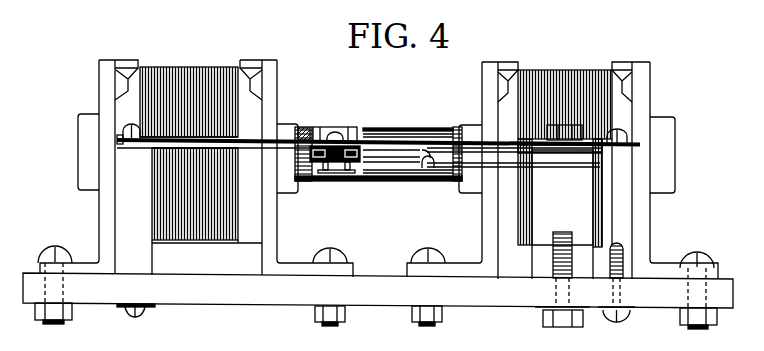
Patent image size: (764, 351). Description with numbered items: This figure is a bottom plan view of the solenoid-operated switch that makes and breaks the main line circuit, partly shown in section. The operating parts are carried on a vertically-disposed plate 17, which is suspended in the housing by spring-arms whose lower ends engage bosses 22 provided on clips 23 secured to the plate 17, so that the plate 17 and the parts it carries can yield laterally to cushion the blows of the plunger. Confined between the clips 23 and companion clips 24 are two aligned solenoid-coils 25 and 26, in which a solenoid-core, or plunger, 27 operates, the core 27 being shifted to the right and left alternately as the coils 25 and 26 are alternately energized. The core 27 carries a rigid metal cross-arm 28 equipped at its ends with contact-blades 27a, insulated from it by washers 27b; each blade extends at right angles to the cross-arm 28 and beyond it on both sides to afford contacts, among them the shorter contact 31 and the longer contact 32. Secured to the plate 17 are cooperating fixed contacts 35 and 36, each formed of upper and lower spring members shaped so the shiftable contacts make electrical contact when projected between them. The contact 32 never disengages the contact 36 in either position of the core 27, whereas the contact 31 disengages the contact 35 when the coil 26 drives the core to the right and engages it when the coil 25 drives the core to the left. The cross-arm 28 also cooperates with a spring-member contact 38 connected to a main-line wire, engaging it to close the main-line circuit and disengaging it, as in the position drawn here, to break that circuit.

The plate 17 is at (720, 287).
The boss 22 is at (90, 144).
The clip 23 is at (40, 270).
The companion clip 24 is at (340, 273).
The solenoid-coil 25 is at (170, 78).
The solenoid-coil 26 is at (556, 75).
The solenoid-core 27 is at (319, 182).
The contact-blade 27a is at (360, 127).
The washer 27b is at (357, 181).
The cross-arm 28 is at (358, 158).
The contact 31 is at (291, 139).
The contact 32 is at (478, 146).
The contact 35 is at (268, 134).
The contact 36 is at (480, 125).
The contact 38 is at (433, 178).